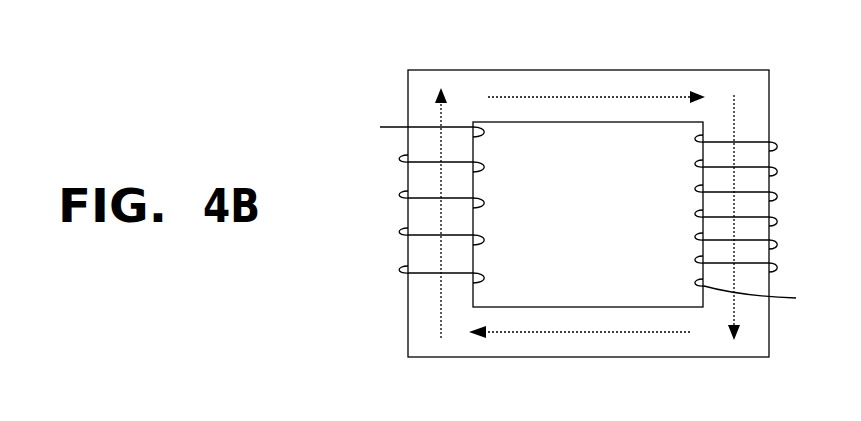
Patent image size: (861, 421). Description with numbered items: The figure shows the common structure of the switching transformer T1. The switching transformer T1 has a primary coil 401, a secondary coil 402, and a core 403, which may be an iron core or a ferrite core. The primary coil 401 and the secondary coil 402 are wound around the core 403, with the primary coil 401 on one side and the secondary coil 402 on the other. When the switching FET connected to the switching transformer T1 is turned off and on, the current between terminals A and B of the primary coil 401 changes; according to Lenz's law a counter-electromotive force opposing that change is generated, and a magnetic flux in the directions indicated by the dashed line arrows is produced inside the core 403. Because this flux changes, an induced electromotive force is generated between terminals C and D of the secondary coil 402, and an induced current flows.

The switching transformer T1 is at (687, 67).
The core 403 is at (757, 70).
The primary coil 401 is at (398, 198).
The secondary coil 402 is at (770, 196).
The primary coil terminal A is at (367, 130).
The primary coil terminal B is at (408, 298).
The secondary coil terminal C is at (769, 120).
The secondary coil terminal D is at (807, 299).